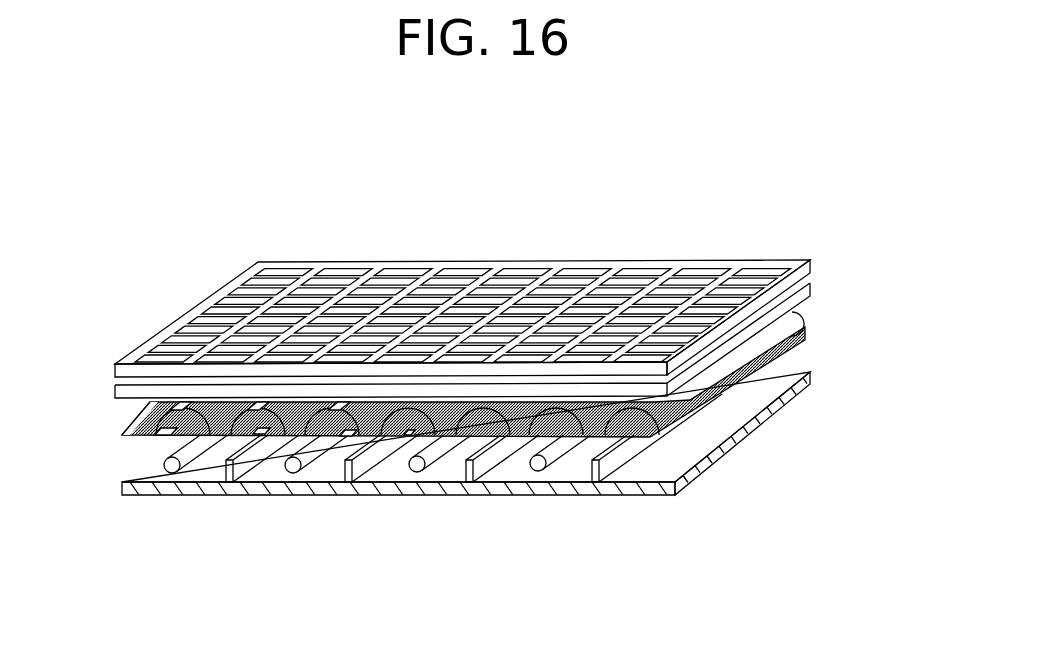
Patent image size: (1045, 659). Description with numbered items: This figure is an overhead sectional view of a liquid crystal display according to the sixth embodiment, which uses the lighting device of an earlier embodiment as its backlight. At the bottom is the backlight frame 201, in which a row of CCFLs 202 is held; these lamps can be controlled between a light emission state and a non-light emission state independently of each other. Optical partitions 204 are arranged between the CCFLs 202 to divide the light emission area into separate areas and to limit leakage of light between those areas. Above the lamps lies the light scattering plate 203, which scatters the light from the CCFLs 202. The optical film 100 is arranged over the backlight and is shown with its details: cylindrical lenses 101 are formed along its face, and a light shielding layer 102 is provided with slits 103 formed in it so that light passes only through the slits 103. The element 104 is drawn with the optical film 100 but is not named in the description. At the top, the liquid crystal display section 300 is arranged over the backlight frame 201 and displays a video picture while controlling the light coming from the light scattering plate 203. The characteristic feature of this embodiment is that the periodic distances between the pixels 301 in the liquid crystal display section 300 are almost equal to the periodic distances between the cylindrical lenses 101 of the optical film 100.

The optical film 100 is at (424, 448).
The cylindrical lenses 101 is at (113, 430).
The light shielding layer 102 is at (188, 438).
The slits 103 is at (275, 435).
The wiring portion 104 is at (342, 436).
The backlight frame 201 is at (438, 487).
The CCFLs 202 is at (537, 466).
The light scattering plate 203 is at (808, 293).
The optical partitions 204 is at (588, 490).
The liquid crystal display section 300 is at (520, 288).
The pixels 301 is at (347, 271).